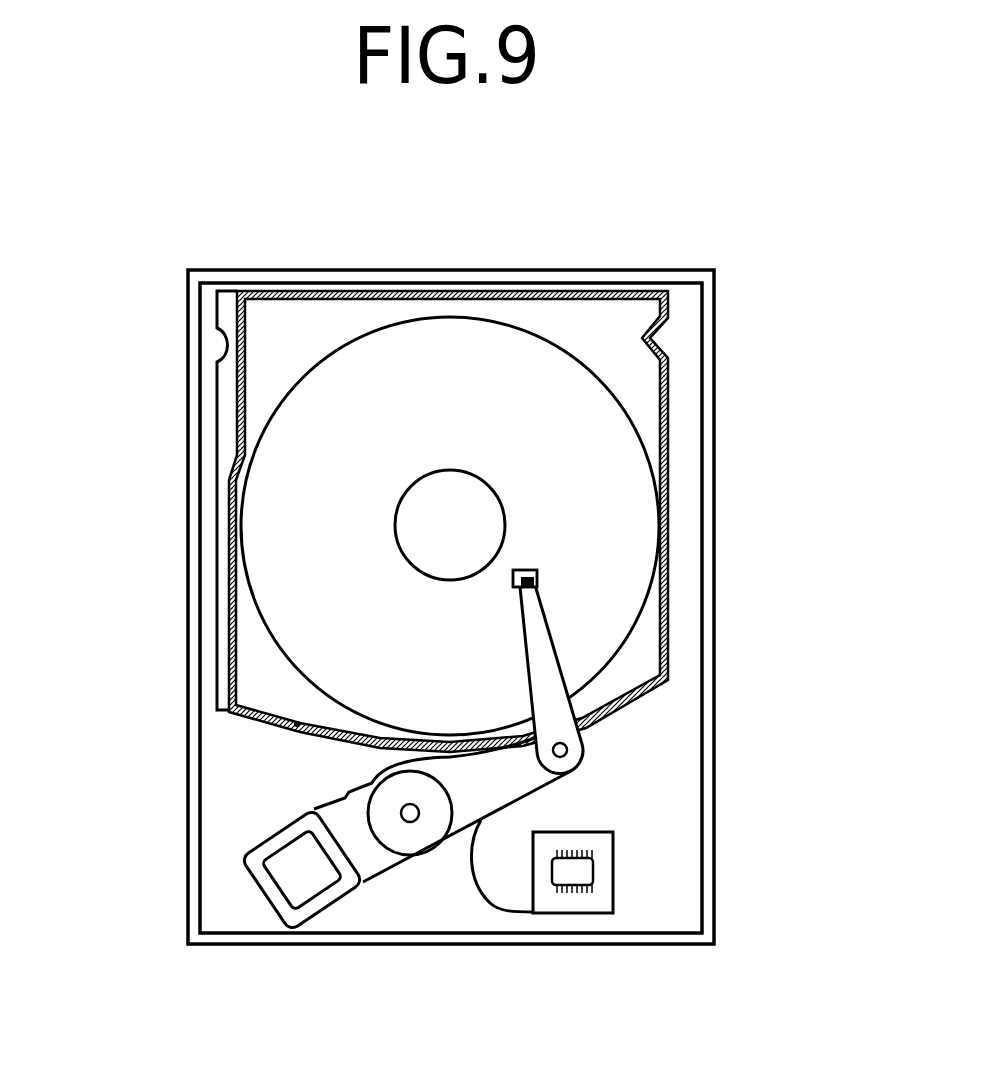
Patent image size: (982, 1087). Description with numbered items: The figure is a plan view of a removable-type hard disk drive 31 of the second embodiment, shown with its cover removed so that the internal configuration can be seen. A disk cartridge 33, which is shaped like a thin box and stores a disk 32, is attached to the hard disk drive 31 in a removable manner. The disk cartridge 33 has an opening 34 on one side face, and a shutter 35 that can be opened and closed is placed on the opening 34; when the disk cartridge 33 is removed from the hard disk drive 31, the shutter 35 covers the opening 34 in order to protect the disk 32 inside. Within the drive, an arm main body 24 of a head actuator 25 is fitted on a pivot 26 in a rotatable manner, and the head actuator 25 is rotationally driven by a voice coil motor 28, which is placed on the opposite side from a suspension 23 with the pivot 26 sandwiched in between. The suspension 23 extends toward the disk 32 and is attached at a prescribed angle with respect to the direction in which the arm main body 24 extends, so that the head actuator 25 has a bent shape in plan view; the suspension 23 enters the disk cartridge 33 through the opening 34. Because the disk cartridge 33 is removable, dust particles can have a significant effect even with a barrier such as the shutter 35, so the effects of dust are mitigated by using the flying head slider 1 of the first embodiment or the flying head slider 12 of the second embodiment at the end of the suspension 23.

The hard disk drive 31 is at (660, 264).
The disk 32 is at (625, 460).
The disk cartridge 33 is at (654, 336).
The opening 34 is at (631, 704).
The shutter 35 is at (297, 724).
The suspension 23 is at (545, 658).
The flying head slider 1 is at (538, 573).
The flying head slider 12 is at (525, 578).
The arm main body 24 is at (372, 865).
The head actuator 25 is at (438, 862).
The pivot 26 is at (402, 809).
The voice coil motor 28 is at (243, 857).